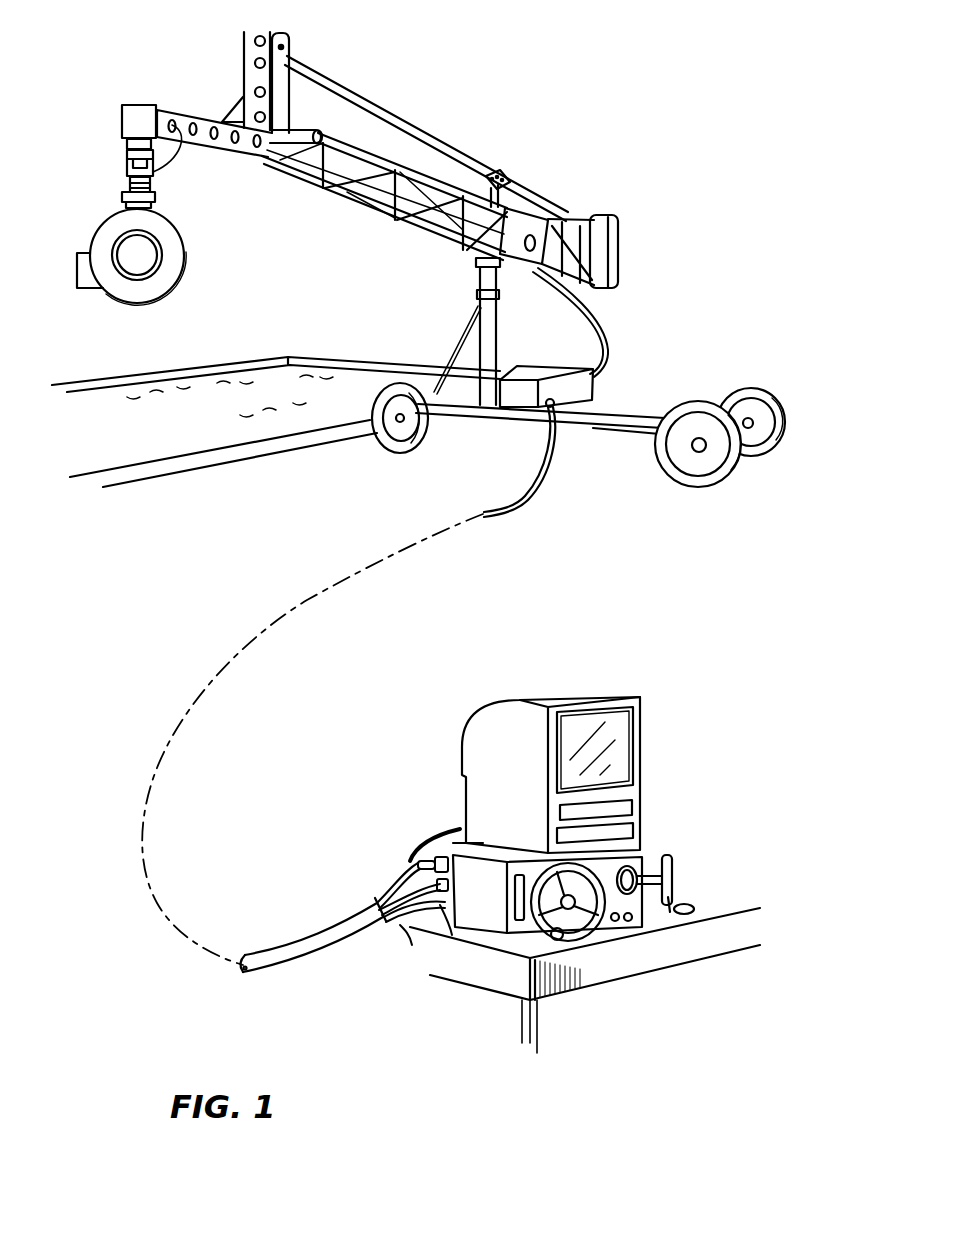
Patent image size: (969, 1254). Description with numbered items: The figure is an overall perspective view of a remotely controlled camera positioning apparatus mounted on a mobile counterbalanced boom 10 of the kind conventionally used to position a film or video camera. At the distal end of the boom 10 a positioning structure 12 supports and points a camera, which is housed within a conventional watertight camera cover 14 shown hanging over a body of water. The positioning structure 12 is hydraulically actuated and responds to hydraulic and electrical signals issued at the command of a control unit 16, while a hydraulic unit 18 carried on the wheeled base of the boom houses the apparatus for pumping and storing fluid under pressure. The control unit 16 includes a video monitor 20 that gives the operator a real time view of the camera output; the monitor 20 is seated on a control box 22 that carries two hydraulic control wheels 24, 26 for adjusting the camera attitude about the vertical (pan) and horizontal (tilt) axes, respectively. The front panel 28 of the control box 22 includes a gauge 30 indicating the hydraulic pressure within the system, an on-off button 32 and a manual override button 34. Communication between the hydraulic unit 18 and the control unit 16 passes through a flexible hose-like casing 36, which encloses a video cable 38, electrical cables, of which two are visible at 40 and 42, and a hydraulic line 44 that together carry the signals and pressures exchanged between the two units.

The mobile counterbalanced boom 10 is at (447, 83).
The positioning structure 12 is at (107, 115).
The watertight camera cover 14 is at (184, 254).
The control unit 16 is at (712, 735).
The hydraulic unit 18 is at (622, 388).
The video monitor 20 is at (652, 697).
The control box 22 is at (640, 860).
The hydraulic control wheel 24 is at (577, 937).
The hydraulic control wheel 26 is at (690, 915).
The front panel 28 is at (635, 862).
The gauge 30 is at (670, 877).
The on-off button 32 is at (617, 923).
The manual override button 34 is at (632, 920).
The flexible hose-like casing 36 is at (510, 505).
The video cable 38 is at (425, 832).
The electrical cable 40 is at (407, 860).
The electrical cable 42 is at (407, 928).
The hydraulic line 44 is at (433, 910).